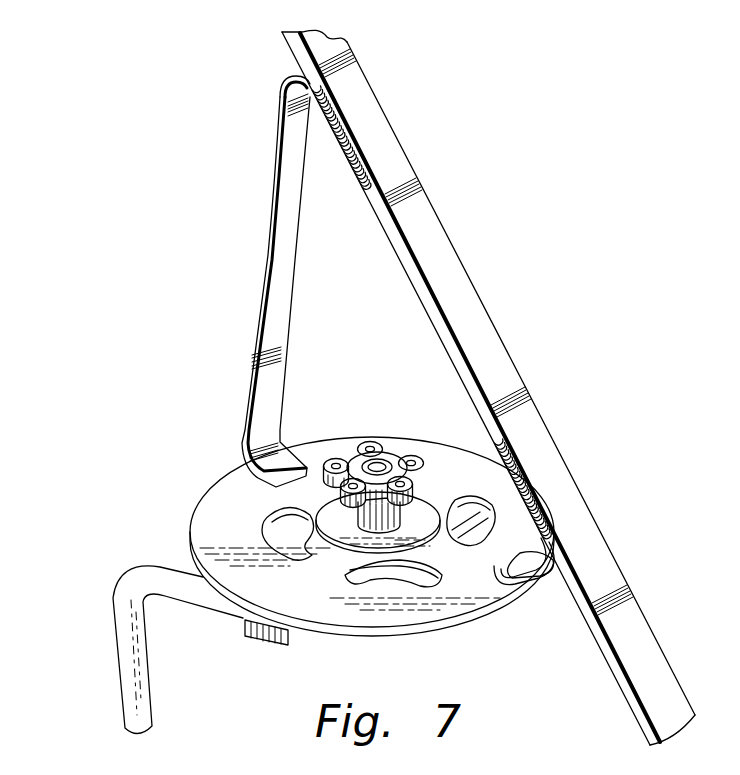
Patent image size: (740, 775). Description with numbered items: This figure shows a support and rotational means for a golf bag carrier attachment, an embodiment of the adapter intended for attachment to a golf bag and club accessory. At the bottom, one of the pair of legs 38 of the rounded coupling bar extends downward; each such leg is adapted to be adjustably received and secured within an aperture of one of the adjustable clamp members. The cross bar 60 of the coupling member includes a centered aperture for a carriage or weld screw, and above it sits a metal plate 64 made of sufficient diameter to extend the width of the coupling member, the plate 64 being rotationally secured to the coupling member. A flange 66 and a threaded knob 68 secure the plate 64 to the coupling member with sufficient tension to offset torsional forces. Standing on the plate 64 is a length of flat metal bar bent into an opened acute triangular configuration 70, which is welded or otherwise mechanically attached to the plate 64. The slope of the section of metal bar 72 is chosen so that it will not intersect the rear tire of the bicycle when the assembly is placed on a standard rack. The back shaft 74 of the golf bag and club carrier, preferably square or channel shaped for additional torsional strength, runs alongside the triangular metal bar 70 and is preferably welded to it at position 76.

The legs 38 is at (128, 688).
The cross bar 60 is at (278, 632).
The plate 64 is at (212, 516).
The flange 66 is at (328, 503).
The threaded knob 68 is at (416, 466).
The opened acute triangular configuration 70 is at (266, 252).
The section of metal bar 72 is at (415, 297).
The back shaft 74 is at (604, 572).
The position 76 is at (343, 137).